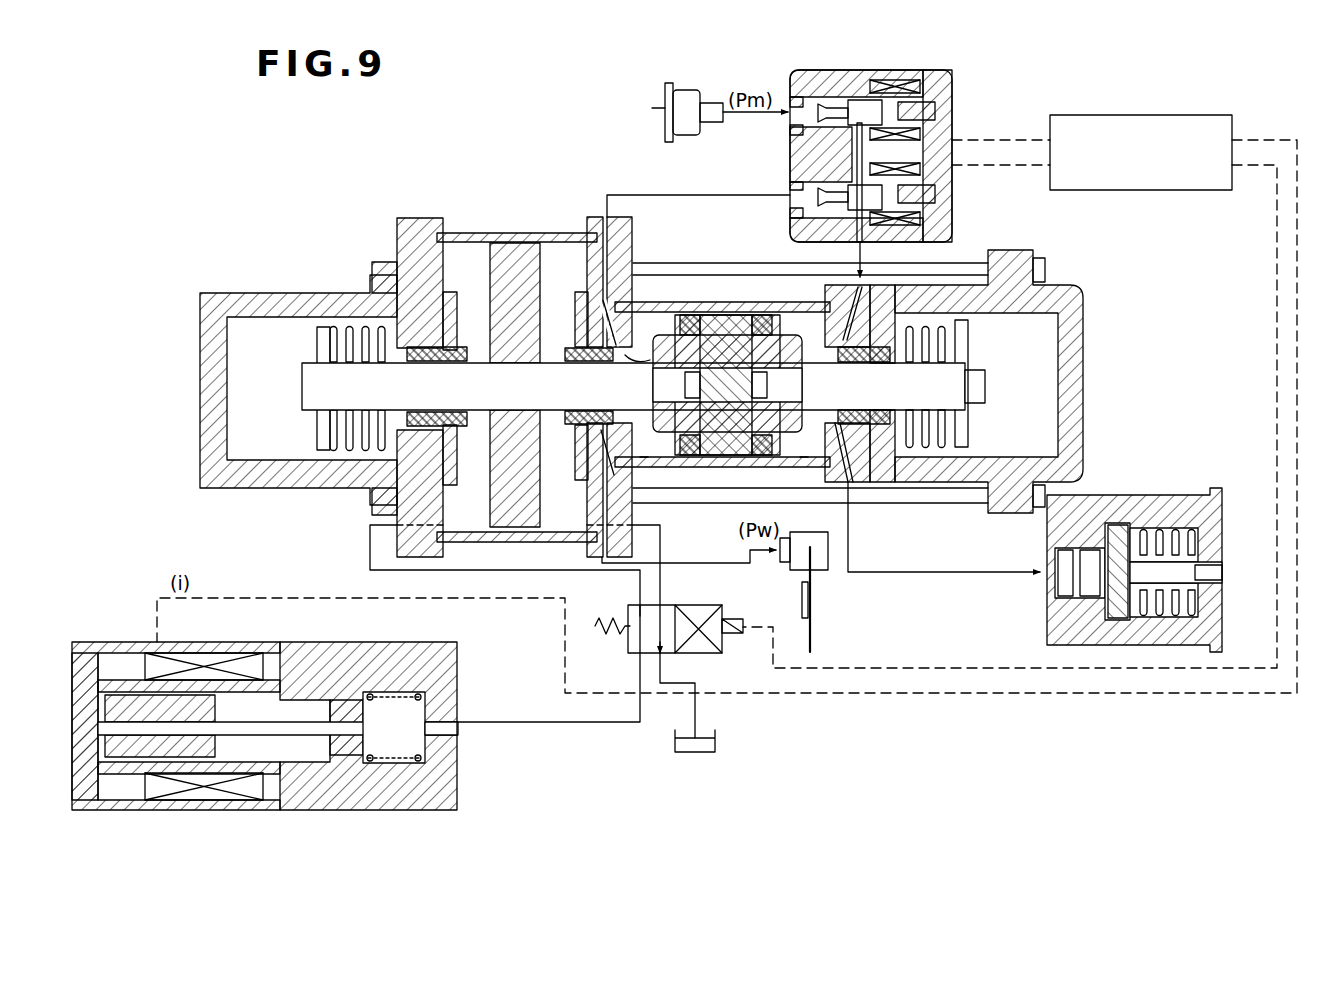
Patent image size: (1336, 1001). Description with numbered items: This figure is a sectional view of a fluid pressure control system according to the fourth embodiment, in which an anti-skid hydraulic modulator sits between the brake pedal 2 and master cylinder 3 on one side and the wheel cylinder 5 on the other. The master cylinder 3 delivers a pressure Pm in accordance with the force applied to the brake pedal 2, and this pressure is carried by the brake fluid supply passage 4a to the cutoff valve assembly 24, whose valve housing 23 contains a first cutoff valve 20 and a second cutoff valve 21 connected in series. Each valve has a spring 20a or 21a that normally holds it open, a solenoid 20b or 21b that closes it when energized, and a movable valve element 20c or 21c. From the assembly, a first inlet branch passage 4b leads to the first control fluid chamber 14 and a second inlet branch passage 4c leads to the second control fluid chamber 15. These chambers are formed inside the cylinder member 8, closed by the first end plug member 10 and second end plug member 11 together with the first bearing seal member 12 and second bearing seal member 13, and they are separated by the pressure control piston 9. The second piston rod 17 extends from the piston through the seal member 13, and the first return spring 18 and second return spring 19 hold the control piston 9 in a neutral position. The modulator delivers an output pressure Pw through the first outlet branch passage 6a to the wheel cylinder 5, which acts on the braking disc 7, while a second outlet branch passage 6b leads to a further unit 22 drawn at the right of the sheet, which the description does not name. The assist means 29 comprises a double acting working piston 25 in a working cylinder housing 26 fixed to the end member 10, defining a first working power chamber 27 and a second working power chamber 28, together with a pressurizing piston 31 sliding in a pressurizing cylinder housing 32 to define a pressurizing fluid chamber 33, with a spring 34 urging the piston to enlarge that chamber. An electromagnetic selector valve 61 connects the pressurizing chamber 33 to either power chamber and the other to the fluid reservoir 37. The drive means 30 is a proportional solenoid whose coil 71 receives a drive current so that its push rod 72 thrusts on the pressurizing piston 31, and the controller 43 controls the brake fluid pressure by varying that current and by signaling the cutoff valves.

The brake pedal 2 is at (654, 100).
The master cylinder 3 is at (708, 102).
The brake fluid supply passage 4a is at (745, 117).
The first inlet branch passage 4b is at (663, 210).
The second inlet branch passage 4c is at (863, 250).
The wheel cylinder 5 is at (800, 532).
The first brake fluid outlet branch passage 6a is at (703, 562).
The second brake fluid outlet branch passage 6b is at (851, 560).
The braking disc 7 is at (813, 633).
The cylinder member 8 is at (727, 340).
The pressure control piston 9 is at (728, 316).
The first end plug member 10 is at (632, 226).
The second end plug member 11 is at (820, 293).
The first bearing seal member 12 is at (649, 353).
The second bearing seal member 13 is at (954, 374).
The first control fluid chamber 14 is at (648, 445).
The second control fluid chamber 15 is at (806, 442).
The second piston rod 17 is at (643, 386).
The first return spring 18 is at (335, 328).
The second return spring 19 is at (958, 432).
The first cutoff valve 20 is at (932, 86).
The spring 20a is at (917, 110).
The solenoid 20b is at (907, 80).
The movable valve element 20c is at (836, 102).
The second cutoff valve 21 is at (921, 209).
The spring 21a is at (932, 193).
The solenoid 21b is at (932, 222).
The movable valve element 21c is at (825, 208).
The relief valve 22 is at (1125, 495).
The valve housing 23 is at (847, 100).
The cutoff valve assembly 24 is at (955, 85).
The working piston 25 is at (524, 240).
The working cylinder housing 26 is at (472, 232).
The first working power chamber 27 is at (517, 387).
The second working power chamber 28 is at (580, 370).
The assist means 29 is at (297, 754).
The drive means 30 is at (190, 754).
The pressurizing piston 31 is at (340, 756).
The pressurizing cylinder housing 32 is at (457, 674).
The pressurizing fluid chamber 33 is at (428, 746).
The spring 34 is at (415, 766).
The fluid reservoir 37 is at (715, 745).
The anti-skid electronic logic controller 43 is at (1143, 115).
The electromagnetic selector valve 61 is at (676, 605).
The coil 71 is at (228, 796).
The push rod 72 is at (308, 746).